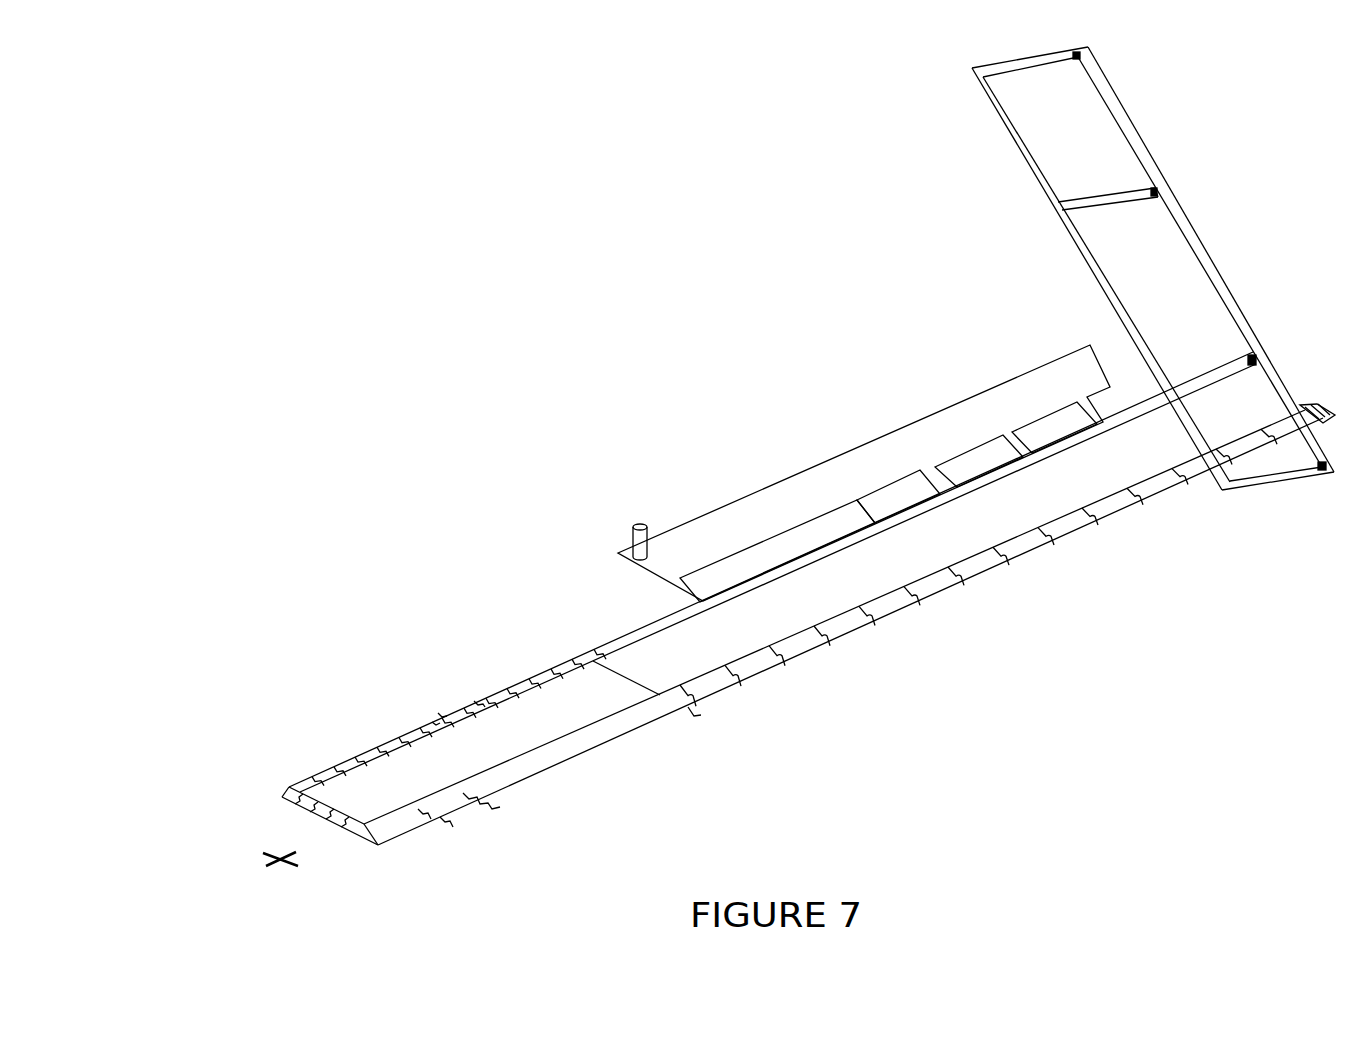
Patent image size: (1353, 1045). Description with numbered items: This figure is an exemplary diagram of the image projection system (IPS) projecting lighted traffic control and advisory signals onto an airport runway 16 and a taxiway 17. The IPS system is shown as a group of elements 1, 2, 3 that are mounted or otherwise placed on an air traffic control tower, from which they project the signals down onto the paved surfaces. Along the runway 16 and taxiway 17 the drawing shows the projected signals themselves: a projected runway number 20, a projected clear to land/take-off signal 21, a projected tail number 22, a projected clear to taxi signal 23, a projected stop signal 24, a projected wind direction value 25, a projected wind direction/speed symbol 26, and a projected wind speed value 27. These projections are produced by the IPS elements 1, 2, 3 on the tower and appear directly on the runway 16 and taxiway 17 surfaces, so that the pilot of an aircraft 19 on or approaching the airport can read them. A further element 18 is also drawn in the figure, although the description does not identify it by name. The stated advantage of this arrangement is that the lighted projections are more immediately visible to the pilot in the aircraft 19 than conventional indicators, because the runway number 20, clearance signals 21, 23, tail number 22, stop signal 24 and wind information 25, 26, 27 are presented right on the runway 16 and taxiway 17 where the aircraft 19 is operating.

The IPS system element 1 is at (647, 510).
The IPS system element 2 is at (655, 477).
The IPS system element 3 is at (624, 477).
The airport runway 16 is at (1114, 149).
The taxiway 17 is at (986, 128).
The slotted plate 18 is at (656, 521).
The aircraft 19 is at (474, 690).
The projected runway number 20 is at (429, 836).
The projected clear to land/take-off signal 21 is at (458, 821).
The projected tail number 22 is at (434, 703).
The projected clear to taxi signal 23 is at (428, 712).
The projected stop signal 24 is at (347, 810).
The projected wind direction value 25 is at (686, 744).
The projected wind direction/speed symbol 26 is at (551, 776).
The projected wind speed value 27 is at (514, 793).